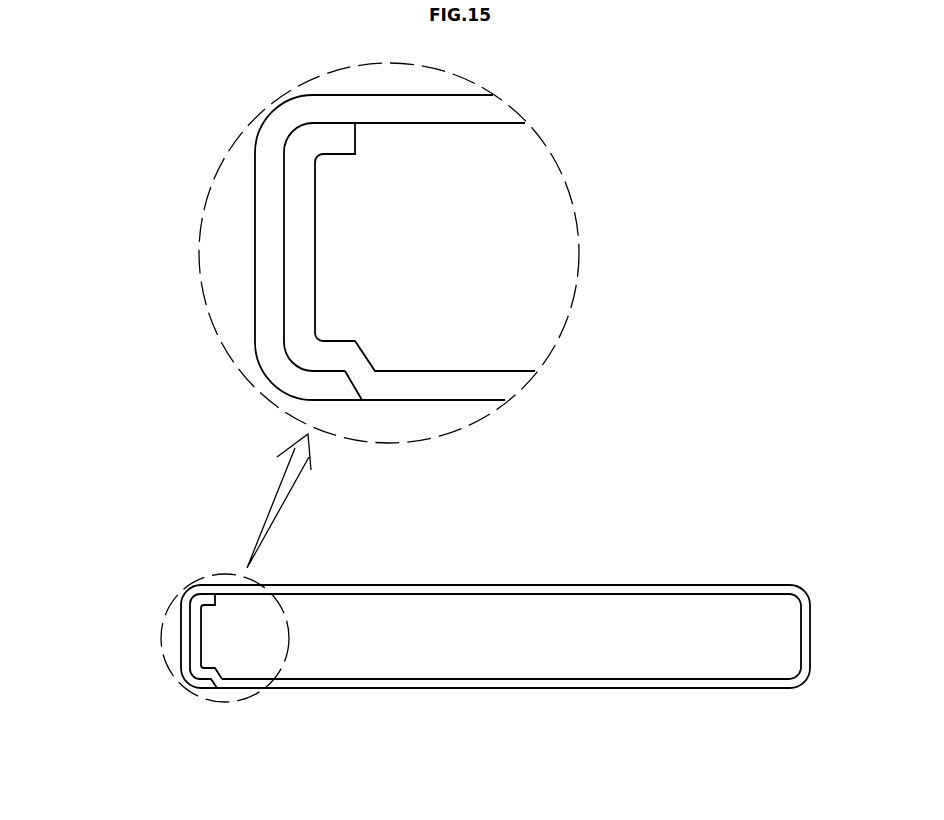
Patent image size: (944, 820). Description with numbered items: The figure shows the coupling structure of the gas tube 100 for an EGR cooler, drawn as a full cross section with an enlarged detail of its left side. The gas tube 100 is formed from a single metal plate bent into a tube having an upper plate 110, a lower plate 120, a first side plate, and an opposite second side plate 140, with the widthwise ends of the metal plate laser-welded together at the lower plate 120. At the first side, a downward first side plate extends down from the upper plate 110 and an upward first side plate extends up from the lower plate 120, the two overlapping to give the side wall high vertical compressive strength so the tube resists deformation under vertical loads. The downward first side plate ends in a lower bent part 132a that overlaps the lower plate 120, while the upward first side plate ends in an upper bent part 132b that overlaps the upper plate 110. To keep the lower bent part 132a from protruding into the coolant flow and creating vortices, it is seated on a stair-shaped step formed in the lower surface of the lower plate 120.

The gas tube 100 is at (770, 476).
The upper plate 110 is at (490, 584).
The lower plate 120 is at (492, 690).
The lower bent part 132a is at (333, 385).
The upper bent part 132b is at (330, 142).
The side bezel 140 is at (808, 638).